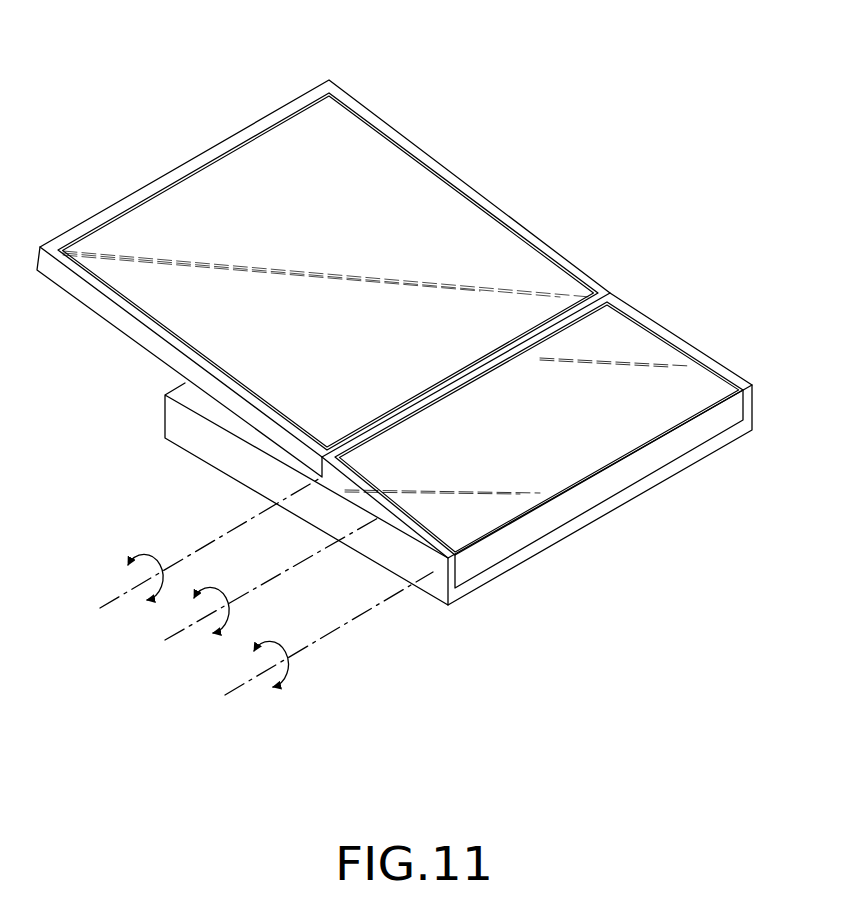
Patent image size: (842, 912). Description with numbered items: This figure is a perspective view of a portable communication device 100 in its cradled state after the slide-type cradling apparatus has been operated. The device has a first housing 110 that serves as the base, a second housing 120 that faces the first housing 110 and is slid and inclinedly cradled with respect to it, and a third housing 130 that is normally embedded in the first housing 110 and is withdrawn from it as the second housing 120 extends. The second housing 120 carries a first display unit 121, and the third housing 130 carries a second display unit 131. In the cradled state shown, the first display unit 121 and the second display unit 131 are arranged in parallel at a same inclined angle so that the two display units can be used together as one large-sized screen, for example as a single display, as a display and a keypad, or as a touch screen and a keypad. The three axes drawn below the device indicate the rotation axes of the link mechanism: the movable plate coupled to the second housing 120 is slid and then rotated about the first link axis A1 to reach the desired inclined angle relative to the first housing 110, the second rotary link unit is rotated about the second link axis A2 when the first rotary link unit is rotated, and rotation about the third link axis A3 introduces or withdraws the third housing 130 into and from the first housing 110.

The portable communication device 100 is at (579, 104).
The first housing 110 is at (180, 415).
The second housing 120 is at (173, 173).
The first display unit 121 is at (378, 148).
The third housing 130 is at (527, 527).
The second display unit 131 is at (625, 338).
The first link axis A1 is at (115, 598).
The second link axis A2 is at (180, 630).
The third link axis A3 is at (240, 683).